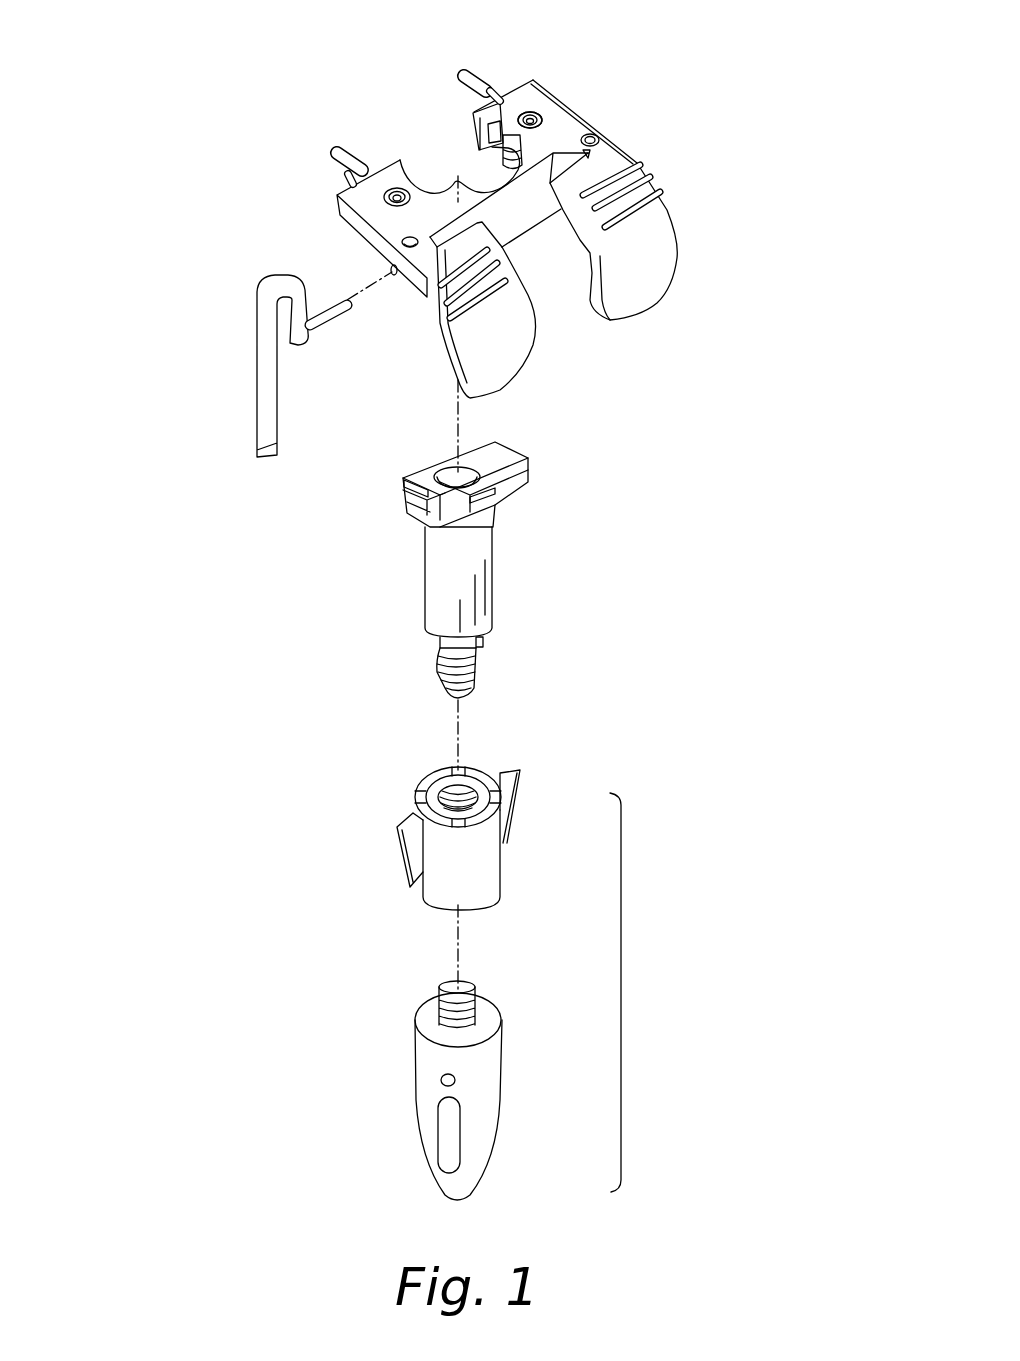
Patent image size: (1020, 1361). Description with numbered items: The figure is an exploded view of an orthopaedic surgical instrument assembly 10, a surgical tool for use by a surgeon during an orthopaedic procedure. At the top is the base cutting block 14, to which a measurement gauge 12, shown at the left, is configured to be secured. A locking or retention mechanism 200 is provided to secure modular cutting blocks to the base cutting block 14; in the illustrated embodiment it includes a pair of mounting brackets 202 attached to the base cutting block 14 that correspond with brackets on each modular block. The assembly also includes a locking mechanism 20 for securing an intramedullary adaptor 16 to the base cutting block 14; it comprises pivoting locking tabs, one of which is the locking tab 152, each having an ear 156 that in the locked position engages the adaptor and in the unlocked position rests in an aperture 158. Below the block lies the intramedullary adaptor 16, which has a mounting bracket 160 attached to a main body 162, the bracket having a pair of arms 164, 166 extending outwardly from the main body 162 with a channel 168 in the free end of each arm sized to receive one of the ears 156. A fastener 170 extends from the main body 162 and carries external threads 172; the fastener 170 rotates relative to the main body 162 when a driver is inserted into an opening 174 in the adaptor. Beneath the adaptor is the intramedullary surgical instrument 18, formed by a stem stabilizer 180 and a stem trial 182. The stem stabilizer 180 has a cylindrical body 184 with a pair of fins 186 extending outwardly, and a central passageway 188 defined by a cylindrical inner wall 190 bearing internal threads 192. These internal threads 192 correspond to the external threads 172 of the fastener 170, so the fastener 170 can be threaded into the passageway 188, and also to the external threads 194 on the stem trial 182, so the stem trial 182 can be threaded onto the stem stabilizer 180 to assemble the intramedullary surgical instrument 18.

The orthopaedic surgical instrument assembly 10 is at (176, 108).
The measurement gauge 12 is at (205, 382).
The base cutting block 14 is at (668, 345).
The intramedullary adaptor 16 is at (523, 592).
The intramedullary surgical instrument 18 is at (621, 982).
The locking mechanism 20 is at (572, 74).
The locking tab 152 is at (515, 160).
The ear 156 is at (545, 128).
The aperture 158 is at (501, 121).
The mounting bracket 160 is at (491, 452).
The main body 162 is at (480, 557).
The arm 164 is at (526, 479).
The arm 166 is at (407, 520).
The channel 168 is at (550, 455).
The fastener 170 is at (467, 650).
The external threads 172 is at (437, 670).
The opening 174 is at (446, 460).
The stem stabilizer 180 is at (358, 828).
The stem trial 182 is at (384, 1072).
The cylindrical body 184 is at (490, 870).
The fins 186 is at (508, 793).
The central passageway 188 is at (469, 782).
The cylindrical inner wall 190 is at (481, 808).
The internal threads 192 is at (437, 793).
The external threads 194 is at (478, 1005).
The retention mechanism 200 is at (348, 96).
The mounting brackets 202 is at (457, 76).